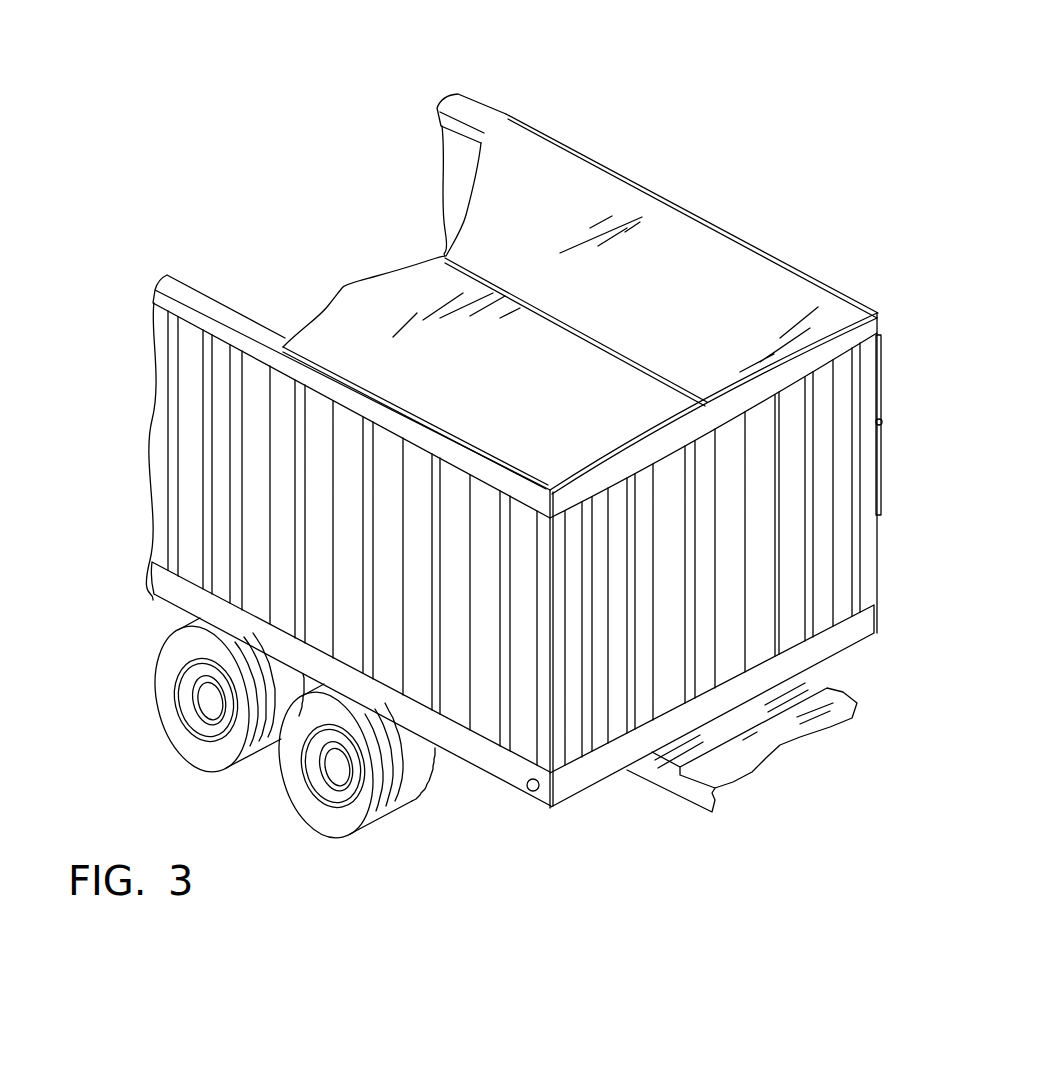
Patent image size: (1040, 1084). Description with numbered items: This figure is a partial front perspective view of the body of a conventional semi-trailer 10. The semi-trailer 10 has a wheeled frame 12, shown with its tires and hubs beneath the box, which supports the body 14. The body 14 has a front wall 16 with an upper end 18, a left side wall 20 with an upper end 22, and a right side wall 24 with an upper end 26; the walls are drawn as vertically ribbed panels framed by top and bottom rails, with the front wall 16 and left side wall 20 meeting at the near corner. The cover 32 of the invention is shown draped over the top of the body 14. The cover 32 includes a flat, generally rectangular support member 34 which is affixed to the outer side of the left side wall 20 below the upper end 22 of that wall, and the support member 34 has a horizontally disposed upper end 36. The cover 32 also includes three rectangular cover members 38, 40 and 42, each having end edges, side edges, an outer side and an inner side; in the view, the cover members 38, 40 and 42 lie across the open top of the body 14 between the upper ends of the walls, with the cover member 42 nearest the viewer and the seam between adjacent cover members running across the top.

The semi-trailer 10 is at (757, 174).
The wheeled frame 12 is at (282, 796).
The body 14 is at (820, 256).
The front wall 16 is at (828, 548).
The upper end 18 is at (208, 262).
The left side wall 20 is at (870, 573).
The upper end 22 is at (880, 312).
The right side wall 24 is at (217, 582).
The upper end 26 is at (197, 310).
The cover 32 is at (609, 209).
The support member 34 is at (890, 473).
The upper end 36 is at (882, 422).
The cover member 38 is at (890, 372).
The cover member 40 is at (484, 218).
The cover member 42 is at (394, 291).